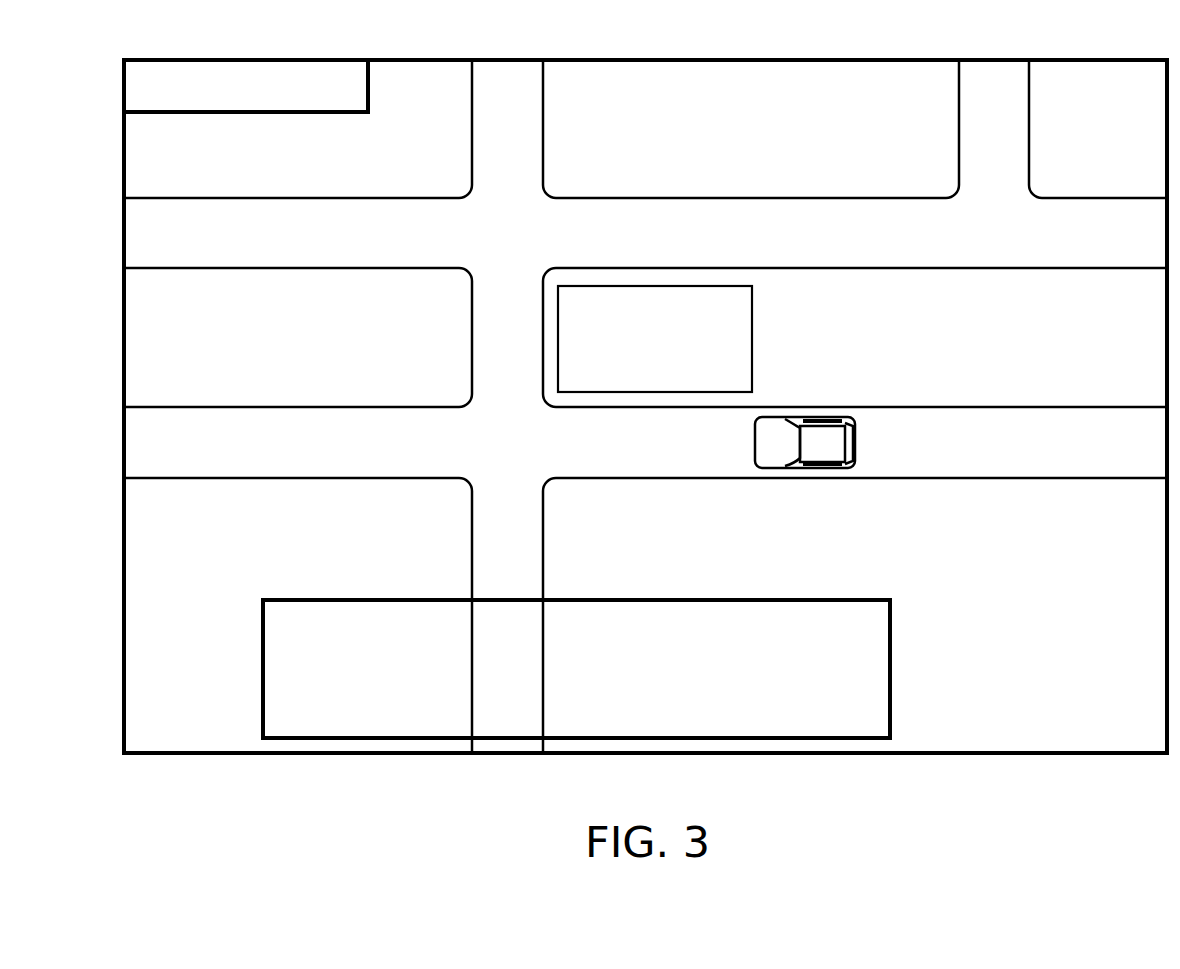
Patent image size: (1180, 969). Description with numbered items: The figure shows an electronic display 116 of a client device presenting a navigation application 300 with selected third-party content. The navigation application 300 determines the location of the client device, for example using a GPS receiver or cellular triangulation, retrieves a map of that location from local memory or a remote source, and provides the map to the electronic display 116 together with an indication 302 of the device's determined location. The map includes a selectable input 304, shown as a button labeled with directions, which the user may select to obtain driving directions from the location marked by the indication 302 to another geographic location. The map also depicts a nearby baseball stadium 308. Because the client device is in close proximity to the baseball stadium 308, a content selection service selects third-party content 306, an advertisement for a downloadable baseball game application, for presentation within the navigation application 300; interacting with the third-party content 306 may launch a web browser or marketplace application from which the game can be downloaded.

The electronic display 116 is at (124, 348).
The navigation application 300 is at (158, 147).
The indication 302 is at (830, 433).
The selectable input 304 is at (350, 78).
The third-party content 306 is at (281, 617).
The baseball stadium 308 is at (733, 302).